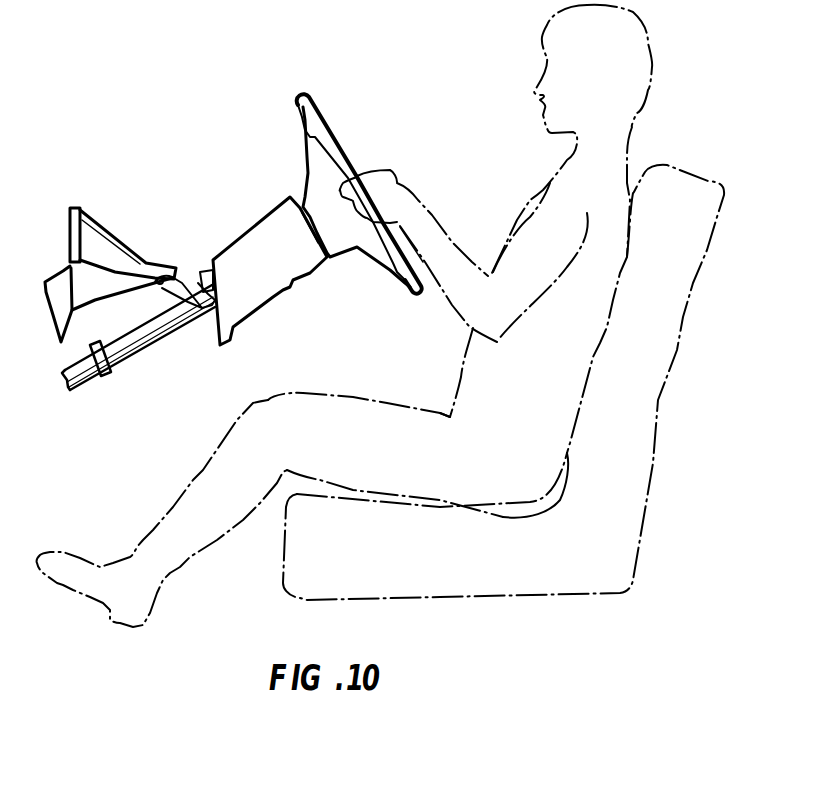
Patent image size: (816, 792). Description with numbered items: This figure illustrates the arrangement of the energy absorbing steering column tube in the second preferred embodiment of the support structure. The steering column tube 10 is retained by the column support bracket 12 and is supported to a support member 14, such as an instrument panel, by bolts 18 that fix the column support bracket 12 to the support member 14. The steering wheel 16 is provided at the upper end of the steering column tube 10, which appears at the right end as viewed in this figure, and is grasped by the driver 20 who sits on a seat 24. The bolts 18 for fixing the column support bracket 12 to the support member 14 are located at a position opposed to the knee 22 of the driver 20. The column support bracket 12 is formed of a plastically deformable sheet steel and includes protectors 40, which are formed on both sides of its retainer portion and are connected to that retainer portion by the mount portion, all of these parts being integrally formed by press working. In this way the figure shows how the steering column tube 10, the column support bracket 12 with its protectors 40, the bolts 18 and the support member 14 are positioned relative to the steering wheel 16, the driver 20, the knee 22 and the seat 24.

The steering column tube 10 is at (141, 347).
The column support bracket 12 is at (203, 283).
The support member 14 is at (75, 282).
The steering wheel 16 is at (328, 138).
The bolts 18 is at (182, 280).
The driver 20 is at (531, 380).
The knee 22 is at (270, 398).
The seat 24 is at (641, 399).
The protectors 40 is at (187, 310).